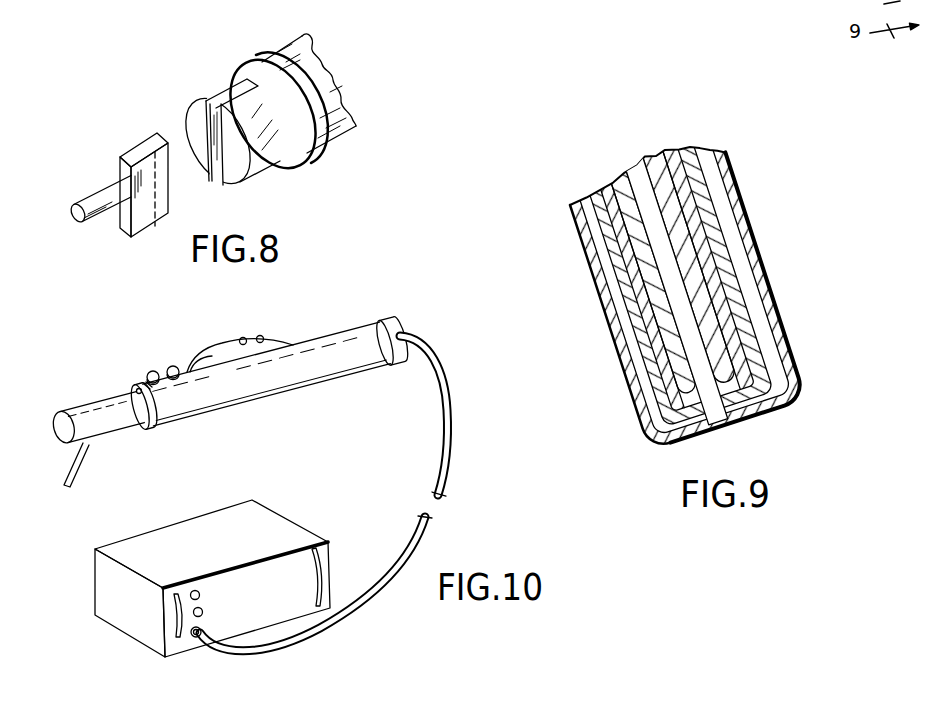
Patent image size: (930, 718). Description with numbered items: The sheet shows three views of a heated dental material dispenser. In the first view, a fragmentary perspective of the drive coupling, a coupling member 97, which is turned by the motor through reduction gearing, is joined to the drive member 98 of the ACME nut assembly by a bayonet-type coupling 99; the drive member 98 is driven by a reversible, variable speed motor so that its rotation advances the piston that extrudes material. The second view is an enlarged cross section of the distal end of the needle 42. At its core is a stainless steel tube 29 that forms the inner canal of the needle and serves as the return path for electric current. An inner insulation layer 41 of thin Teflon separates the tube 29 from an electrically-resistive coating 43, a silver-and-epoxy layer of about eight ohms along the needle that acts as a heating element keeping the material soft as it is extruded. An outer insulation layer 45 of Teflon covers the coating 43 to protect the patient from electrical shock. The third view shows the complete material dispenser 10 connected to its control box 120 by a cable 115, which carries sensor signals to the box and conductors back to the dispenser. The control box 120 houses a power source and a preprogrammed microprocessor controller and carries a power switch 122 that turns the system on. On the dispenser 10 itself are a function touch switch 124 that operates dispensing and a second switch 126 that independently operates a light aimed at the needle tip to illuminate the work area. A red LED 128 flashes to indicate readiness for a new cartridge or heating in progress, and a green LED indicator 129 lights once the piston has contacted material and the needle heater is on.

In FIG. 10, the material dispenser 10 is at (229, 387).
In FIG. 9, the stainless steel tube 29 is at (653, 160).
In FIG. 9, the inner insulation layer 41 is at (603, 180).
In FIG. 9, the needle 42 is at (665, 276).
In FIG. 10, the needle 42 is at (84, 472).
In FIG. 9, the electrically-resistive coating 43 is at (583, 195).
In FIG. 9, the outer insulation layer 45 is at (570, 205).
In FIG. 8, the coupling member 97 is at (95, 196).
In FIG. 8, the drive member 98 is at (279, 48).
In FIG. 8, the bayonet-type coupling 99 is at (112, 154).
In FIG. 10, the cable 115 is at (440, 391).
In FIG. 10, the control box 120 is at (212, 558).
In FIG. 10, the power switch 122 is at (203, 610).
In FIG. 10, the function touch switch 124 is at (153, 370).
In FIG. 10, the second switch 126 is at (174, 365).
In FIG. 10, the red LED 128 is at (137, 391).
In FIG. 10, the green LED indicator 129 is at (146, 386).